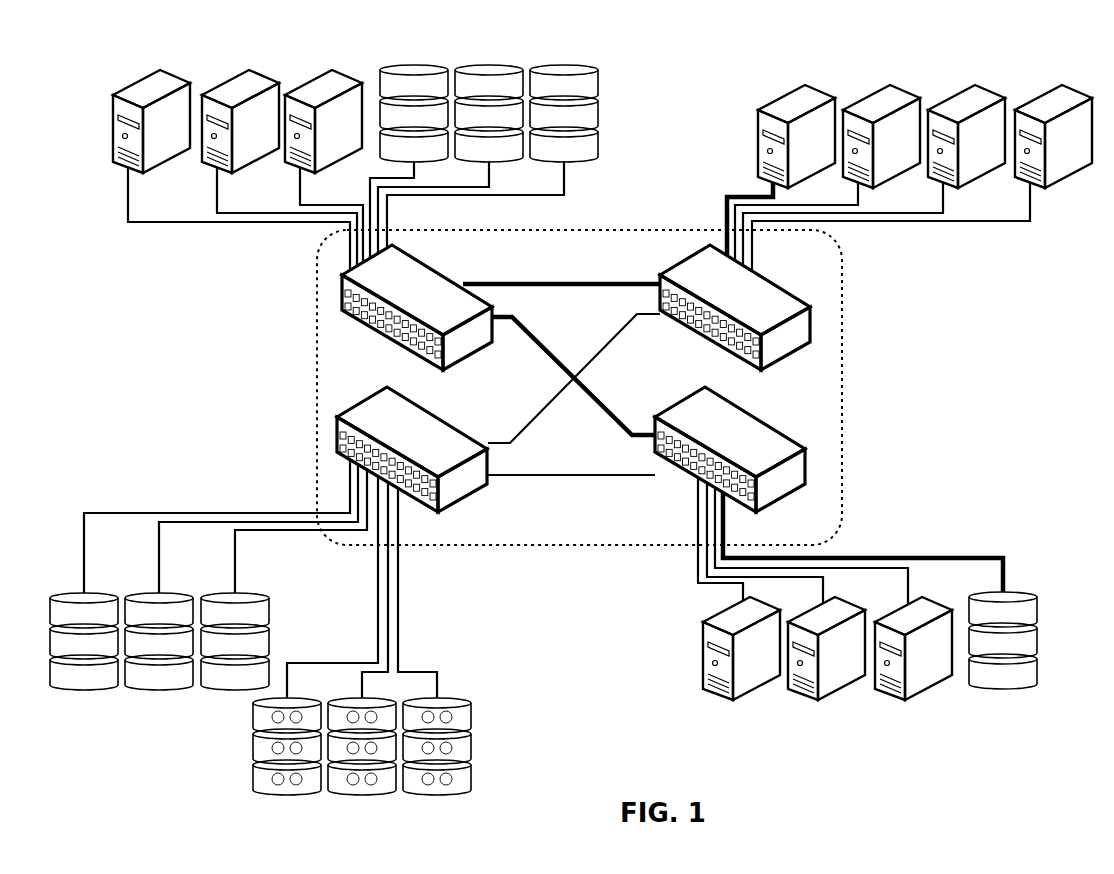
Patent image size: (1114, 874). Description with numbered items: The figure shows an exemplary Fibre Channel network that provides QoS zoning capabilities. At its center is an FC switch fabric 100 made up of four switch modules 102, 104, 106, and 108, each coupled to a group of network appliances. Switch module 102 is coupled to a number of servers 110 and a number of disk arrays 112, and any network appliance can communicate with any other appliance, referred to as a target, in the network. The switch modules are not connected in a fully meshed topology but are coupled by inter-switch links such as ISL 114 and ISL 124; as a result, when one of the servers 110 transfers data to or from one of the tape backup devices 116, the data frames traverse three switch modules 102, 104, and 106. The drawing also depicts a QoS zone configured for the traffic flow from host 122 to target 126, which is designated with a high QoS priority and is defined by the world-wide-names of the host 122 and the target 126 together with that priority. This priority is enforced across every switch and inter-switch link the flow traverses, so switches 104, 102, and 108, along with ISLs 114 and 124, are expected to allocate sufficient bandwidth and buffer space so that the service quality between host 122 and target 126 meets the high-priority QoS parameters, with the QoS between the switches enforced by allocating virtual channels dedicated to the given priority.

The FC switch fabric 100 is at (579, 387).
The switch module 102 is at (417, 307).
The switch module 104 is at (735, 307).
The switch module 106 is at (412, 449).
The switch module 108 is at (730, 449).
The servers 110 is at (123, 68).
The disk arrays 112 is at (375, 68).
The inter-switch link 114 is at (542, 283).
The tape backup devices 116 is at (244, 783).
The host 122 is at (805, 83).
The inter-switch link 124 is at (602, 397).
The target 126 is at (1008, 685).